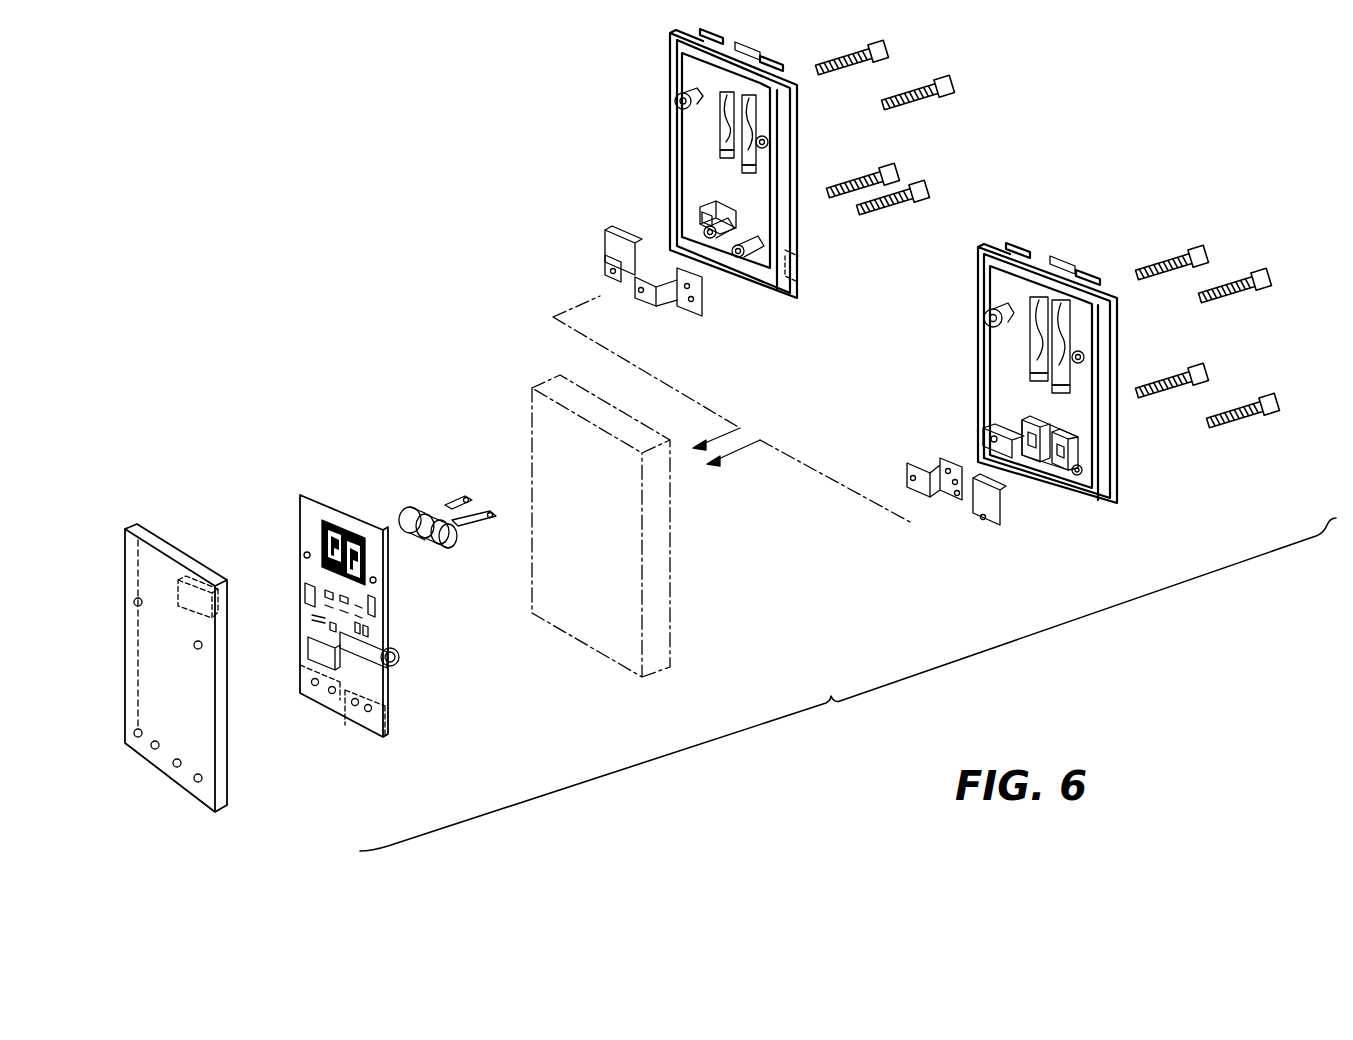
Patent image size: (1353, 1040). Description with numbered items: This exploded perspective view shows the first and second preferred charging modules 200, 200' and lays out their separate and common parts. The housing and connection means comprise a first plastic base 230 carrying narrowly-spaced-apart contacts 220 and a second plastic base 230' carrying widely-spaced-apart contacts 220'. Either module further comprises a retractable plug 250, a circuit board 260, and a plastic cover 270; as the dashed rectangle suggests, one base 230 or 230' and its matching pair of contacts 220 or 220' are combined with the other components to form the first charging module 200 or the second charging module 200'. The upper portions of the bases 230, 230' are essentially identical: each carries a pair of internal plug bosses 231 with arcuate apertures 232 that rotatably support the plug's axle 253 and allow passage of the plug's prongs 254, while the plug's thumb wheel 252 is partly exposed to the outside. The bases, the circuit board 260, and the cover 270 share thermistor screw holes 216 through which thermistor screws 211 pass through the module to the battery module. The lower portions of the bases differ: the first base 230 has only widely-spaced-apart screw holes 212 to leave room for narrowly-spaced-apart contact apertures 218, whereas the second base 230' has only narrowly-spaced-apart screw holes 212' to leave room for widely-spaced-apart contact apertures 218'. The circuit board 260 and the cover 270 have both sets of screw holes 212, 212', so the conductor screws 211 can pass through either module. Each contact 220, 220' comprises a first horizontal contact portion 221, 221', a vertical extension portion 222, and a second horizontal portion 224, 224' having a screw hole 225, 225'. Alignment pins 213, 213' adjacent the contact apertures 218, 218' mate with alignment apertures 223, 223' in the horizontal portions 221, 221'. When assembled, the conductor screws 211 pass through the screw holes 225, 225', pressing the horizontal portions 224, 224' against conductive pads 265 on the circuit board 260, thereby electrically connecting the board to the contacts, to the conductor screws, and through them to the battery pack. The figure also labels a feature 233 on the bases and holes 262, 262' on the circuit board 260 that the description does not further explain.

The first charging module 200 is at (848, 684).
The second charging module 200' is at (848, 684).
The screws 211 is at (1075, 249).
The widely-spaced-apart screw holes 212 is at (631, 599).
The narrowly-spaced-apart screw holes 212' is at (468, 514).
The alignment pin 213 is at (1100, 443).
The alignment pin 213' is at (727, 201).
The thermistor screw holes 216 is at (631, 371).
The narrowly-spaced-apart contact apertures 218 is at (1094, 491).
The widely-spaced-apart contact apertures 218' is at (748, 236).
The narrowly-spaced-apart contacts 220 is at (927, 508).
The widely-spaced-apart contacts 220' is at (633, 275).
The first horizontal contact portion 221 is at (890, 430).
The first horizontal contact portion 221' is at (734, 334).
The vertical extension portion 222 is at (930, 505).
The alignment aperture 223 is at (937, 516).
The alignment aperture 223' is at (581, 249).
The second horizontal portion 224 is at (884, 461).
The second horizontal portion 224' is at (669, 313).
The screw hole 225 is at (934, 531).
The screw hole 225' is at (620, 294).
The first plastic base 230 is at (1048, 342).
The second plastic base 230' is at (648, 163).
The internal plug boss 231 is at (744, 162).
The arcuate aperture 232 is at (740, 118).
The housing tab 233 is at (742, 95).
The retractable plug 250 is at (447, 521).
The thumb wheel 252 is at (434, 548).
The axle 253 is at (432, 525).
The prongs 254 is at (444, 495).
The circuit board 260 is at (377, 613).
The board terminal holes 262 is at (384, 720).
The board terminal holes (alternate) 262' is at (387, 748).
The conductive pads 265 is at (377, 633).
The plastic cover 270 is at (192, 496).